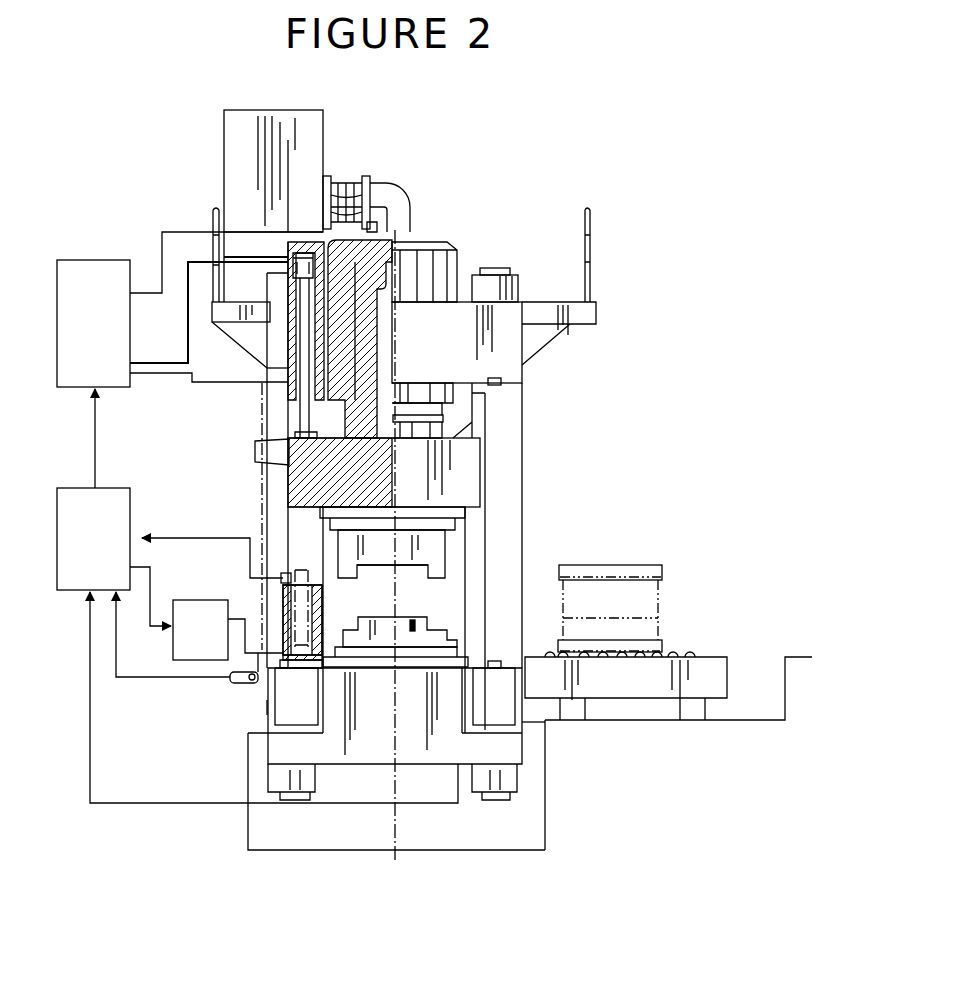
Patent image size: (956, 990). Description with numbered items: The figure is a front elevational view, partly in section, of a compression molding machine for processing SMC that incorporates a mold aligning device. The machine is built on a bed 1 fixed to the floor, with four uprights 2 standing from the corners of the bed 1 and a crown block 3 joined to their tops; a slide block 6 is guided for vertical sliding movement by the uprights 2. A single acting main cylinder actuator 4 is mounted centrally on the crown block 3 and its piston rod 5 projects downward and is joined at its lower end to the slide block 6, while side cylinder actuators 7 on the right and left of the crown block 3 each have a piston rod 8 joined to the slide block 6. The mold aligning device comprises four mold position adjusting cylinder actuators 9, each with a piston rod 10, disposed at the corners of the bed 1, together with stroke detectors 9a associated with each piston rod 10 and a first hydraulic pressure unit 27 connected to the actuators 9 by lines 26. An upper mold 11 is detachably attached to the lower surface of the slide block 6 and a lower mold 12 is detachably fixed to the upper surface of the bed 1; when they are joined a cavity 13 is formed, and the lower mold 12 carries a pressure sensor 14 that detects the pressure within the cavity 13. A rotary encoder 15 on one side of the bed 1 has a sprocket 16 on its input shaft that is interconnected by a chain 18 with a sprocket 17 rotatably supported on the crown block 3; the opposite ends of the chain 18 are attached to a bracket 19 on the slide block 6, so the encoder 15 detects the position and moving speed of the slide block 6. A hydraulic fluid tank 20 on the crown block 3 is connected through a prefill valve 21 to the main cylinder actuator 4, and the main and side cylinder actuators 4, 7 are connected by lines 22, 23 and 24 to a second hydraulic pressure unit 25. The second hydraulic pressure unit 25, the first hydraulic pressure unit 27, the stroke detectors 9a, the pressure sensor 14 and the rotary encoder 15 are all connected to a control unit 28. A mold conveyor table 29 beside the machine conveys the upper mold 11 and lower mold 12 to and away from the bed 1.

The bed 1 is at (358, 757).
The uprights 2 is at (495, 434).
The crown block 3 is at (512, 316).
The main cylinder actuator 4 is at (405, 224).
The piston rod 5 is at (383, 275).
The slide block 6 is at (483, 476).
The side cylinder actuators 7 is at (282, 391).
The piston rod 8 is at (300, 416).
The mold position adjusting cylinder actuators 9 is at (282, 596).
The stroke detectors 9a is at (293, 598).
The piston rod 10 is at (300, 568).
The upper mold 11 is at (440, 560).
The lower mold 12 is at (427, 629).
The cavity 13 is at (376, 567).
The pressure sensor 14 is at (412, 620).
The rotary encoder 15 is at (233, 684).
The sprocket 16 is at (267, 713).
The sprocket 17 is at (258, 334).
The chain 18 is at (265, 370).
The bracket 19 is at (256, 454).
The hydraulic fluid tank 20 is at (315, 128).
The prefill valve 21 is at (378, 177).
The line 22 is at (186, 232).
The line 23 is at (188, 323).
The line 24 is at (170, 383).
The second hydraulic pressure unit 25 is at (93, 323).
The line 26 is at (250, 643).
The first hydraulic pressure unit 27 is at (172, 642).
The control unit 28 is at (93, 539).
The mold conveyor table 29 is at (630, 648).